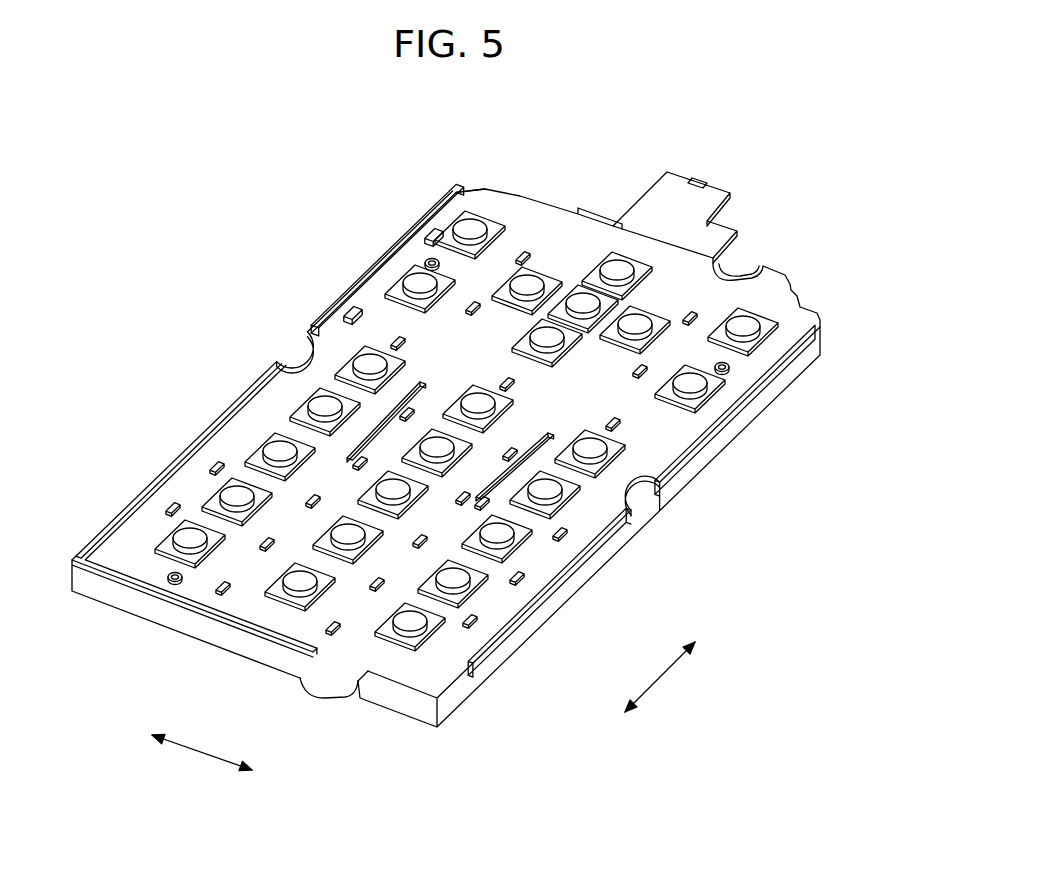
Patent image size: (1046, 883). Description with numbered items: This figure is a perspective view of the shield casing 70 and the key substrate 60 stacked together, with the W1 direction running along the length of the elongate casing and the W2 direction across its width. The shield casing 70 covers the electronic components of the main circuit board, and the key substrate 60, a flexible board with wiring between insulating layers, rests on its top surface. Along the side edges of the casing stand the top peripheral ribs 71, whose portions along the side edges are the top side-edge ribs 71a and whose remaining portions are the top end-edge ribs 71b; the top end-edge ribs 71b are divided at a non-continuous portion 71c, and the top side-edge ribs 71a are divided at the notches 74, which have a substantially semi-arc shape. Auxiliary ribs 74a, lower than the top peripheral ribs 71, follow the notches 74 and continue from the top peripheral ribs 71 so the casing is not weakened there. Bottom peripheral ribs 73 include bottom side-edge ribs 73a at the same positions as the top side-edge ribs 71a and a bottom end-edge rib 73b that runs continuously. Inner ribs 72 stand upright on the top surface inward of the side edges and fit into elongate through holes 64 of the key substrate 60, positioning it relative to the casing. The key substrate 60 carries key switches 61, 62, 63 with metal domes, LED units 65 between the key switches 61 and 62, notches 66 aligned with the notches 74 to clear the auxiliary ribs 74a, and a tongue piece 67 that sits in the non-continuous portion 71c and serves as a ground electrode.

The key substrate 60 is at (532, 184).
The key switch 61 is at (418, 284).
The key switch 62 is at (237, 498).
The key switch 63 is at (583, 303).
The through hole 64 is at (415, 378).
The LED unit 65 is at (345, 460).
The notch 66 is at (310, 340).
The tongue piece 67 is at (318, 685).
The shield casing 70 is at (475, 701).
The top peripheral rib 71 is at (440, 203).
The top side-edge rib 71a is at (735, 410).
The top end-edge rib 71b is at (625, 230).
The non-continuous portion 71c is at (365, 675).
The inner rib 72 is at (347, 312).
The bottom peripheral rib 73 is at (441, 449).
The bottom side-edge rib 73a is at (737, 438).
The bottom end-edge rib 73b is at (135, 612).
The notch 74 is at (288, 347).
The auxiliary rib 74a is at (290, 357).